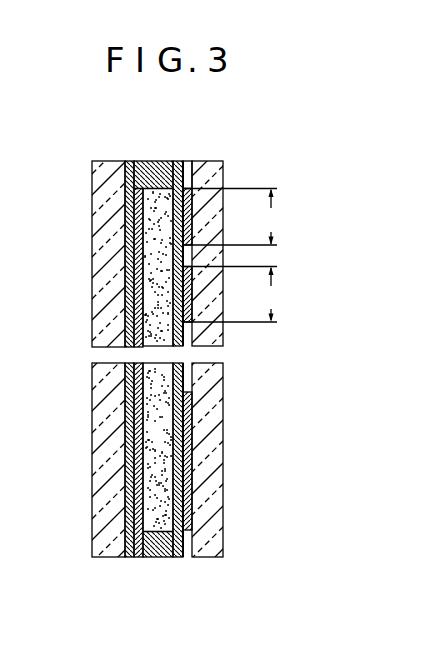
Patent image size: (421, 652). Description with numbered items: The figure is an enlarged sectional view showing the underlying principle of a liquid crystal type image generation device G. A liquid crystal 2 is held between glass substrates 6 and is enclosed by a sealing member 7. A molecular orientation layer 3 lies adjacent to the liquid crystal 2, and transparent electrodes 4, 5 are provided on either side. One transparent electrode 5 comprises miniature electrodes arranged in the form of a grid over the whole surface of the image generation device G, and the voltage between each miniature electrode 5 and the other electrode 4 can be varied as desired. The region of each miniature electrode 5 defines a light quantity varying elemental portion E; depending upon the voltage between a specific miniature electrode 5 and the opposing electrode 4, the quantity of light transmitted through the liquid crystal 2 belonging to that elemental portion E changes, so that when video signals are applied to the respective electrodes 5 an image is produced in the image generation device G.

The liquid crystal 2 is at (157, 303).
The molecular orientation layer 3 is at (140, 242).
The transparent electrode 4 is at (129, 199).
The transparent electrode 5 is at (187, 223).
The glass substrate 6 is at (103, 340).
The sealing member 7 is at (152, 172).
The image generation device G is at (197, 155).
The light quantity varying elemental portion E is at (231, 256).